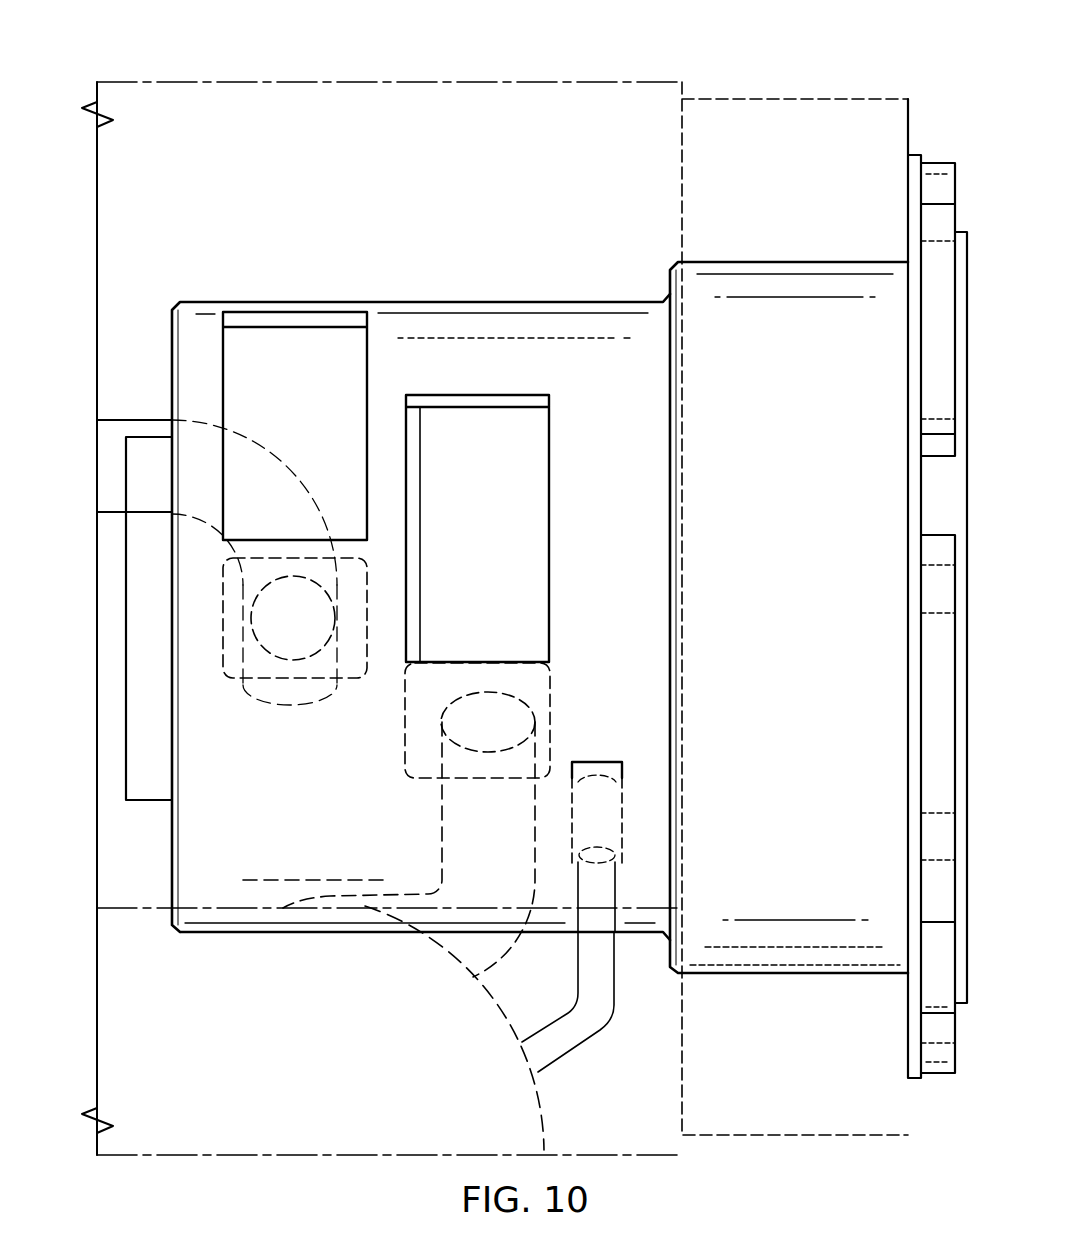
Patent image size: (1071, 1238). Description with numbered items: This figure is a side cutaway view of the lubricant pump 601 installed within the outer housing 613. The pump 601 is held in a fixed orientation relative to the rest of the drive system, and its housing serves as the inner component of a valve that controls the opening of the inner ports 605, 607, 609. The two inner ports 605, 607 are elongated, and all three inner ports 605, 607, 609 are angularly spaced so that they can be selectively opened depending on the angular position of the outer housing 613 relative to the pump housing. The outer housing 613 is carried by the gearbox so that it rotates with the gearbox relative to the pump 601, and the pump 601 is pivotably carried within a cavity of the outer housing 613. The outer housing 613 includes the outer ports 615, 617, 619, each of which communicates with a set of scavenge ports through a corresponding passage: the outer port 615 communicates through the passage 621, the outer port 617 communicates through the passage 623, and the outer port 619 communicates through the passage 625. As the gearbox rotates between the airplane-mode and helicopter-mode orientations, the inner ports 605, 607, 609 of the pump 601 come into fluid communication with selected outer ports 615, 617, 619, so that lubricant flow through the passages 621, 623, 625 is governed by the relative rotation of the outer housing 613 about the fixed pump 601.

The pump 601 is at (794, 258).
The inner port 605 is at (367, 360).
The inner port 607 is at (549, 476).
The inner port 609 is at (597, 760).
The outer housing 613 is at (799, 91).
The outer port 615 is at (275, 557).
The outer port 617 is at (483, 660).
The outer port 619 is at (622, 820).
The passage 621 is at (283, 705).
The passage 623 is at (442, 838).
The passage 625 is at (573, 1050).